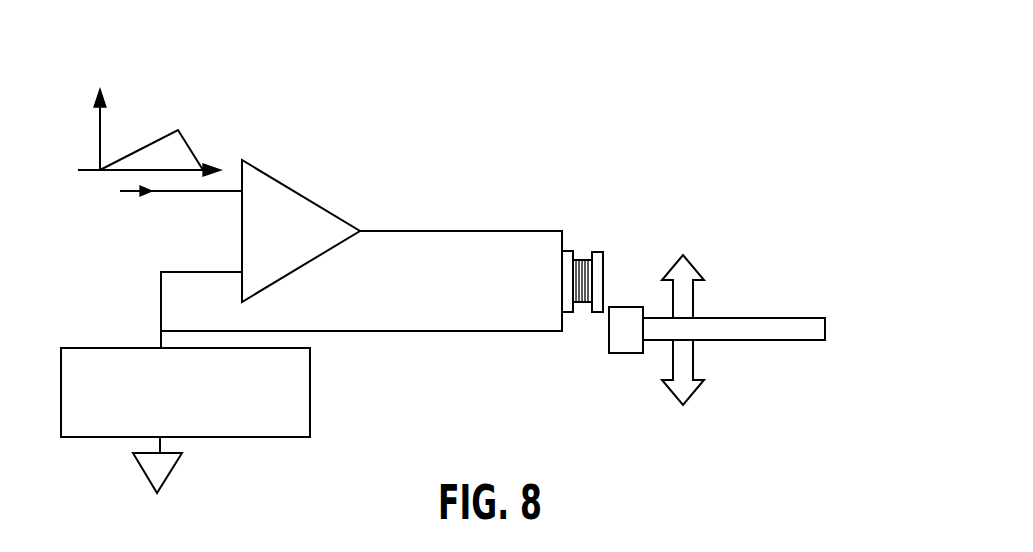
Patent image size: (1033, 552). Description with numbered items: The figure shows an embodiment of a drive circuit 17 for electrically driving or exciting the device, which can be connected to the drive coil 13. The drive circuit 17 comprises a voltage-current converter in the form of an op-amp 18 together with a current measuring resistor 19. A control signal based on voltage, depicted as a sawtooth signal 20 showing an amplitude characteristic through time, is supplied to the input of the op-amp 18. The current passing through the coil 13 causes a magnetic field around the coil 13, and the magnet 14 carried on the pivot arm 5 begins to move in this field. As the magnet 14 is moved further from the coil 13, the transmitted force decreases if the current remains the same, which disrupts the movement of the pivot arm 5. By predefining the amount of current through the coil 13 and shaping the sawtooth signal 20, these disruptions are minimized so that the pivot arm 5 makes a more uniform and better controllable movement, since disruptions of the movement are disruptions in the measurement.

The pivot arm 5 is at (770, 331).
The drive coil 13 is at (582, 262).
The magnet 14 is at (620, 332).
The drive circuit 17 is at (500, 196).
The op-amp 18 is at (292, 190).
The current measuring resistor 19 is at (303, 403).
The voltage signal graph 20 is at (167, 123).